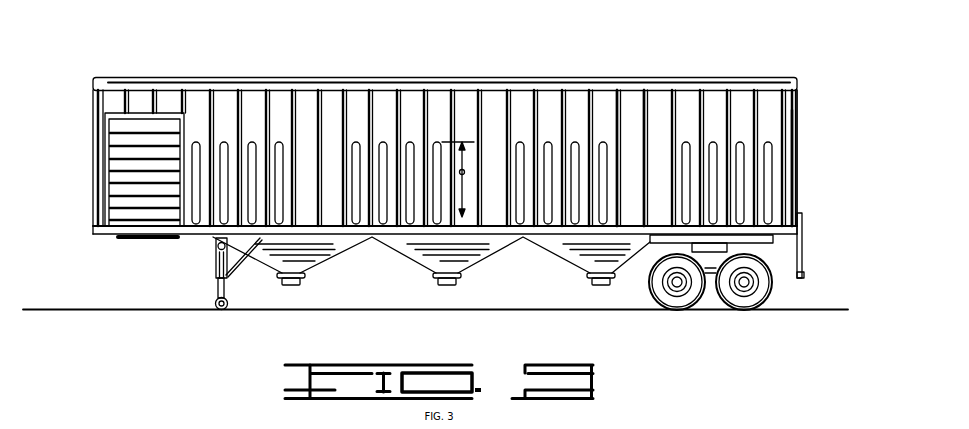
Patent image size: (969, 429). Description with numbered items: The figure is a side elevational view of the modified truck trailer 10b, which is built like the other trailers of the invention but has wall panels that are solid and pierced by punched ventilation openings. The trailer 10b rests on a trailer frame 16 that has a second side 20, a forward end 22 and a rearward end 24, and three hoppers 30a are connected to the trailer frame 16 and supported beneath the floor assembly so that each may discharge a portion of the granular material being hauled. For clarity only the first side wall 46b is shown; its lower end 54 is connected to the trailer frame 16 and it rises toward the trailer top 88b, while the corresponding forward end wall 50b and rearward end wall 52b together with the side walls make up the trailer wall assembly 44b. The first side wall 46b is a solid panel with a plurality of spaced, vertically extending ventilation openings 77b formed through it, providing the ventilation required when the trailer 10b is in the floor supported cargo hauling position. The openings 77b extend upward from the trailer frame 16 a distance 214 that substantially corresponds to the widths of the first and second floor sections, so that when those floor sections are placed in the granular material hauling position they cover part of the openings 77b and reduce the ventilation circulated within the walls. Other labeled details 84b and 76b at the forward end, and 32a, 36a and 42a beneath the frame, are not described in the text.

The modified truck trailer 10b is at (453, 143).
The louvered vent door 84b is at (141, 128).
The front wall 50b is at (104, 126).
The corner post 76b is at (96, 172).
The forward end 22 is at (93, 228).
The lower end 54 is at (192, 223).
The ventilation openings 77b is at (253, 170).
The distance 214 is at (465, 171).
The first side wall 46b is at (634, 106).
The trailer top 88b is at (722, 60).
The rear wall 44b is at (817, 106).
The rear wall panel 52b is at (817, 132).
The rearward end 24 is at (800, 233).
The trailer frame 16 is at (801, 243).
The second side 20 is at (553, 235).
The hoppers 30a is at (318, 262).
The strut 32a is at (270, 257).
The hanger bracket 36a is at (279, 278).
The lower support 42a is at (291, 286).